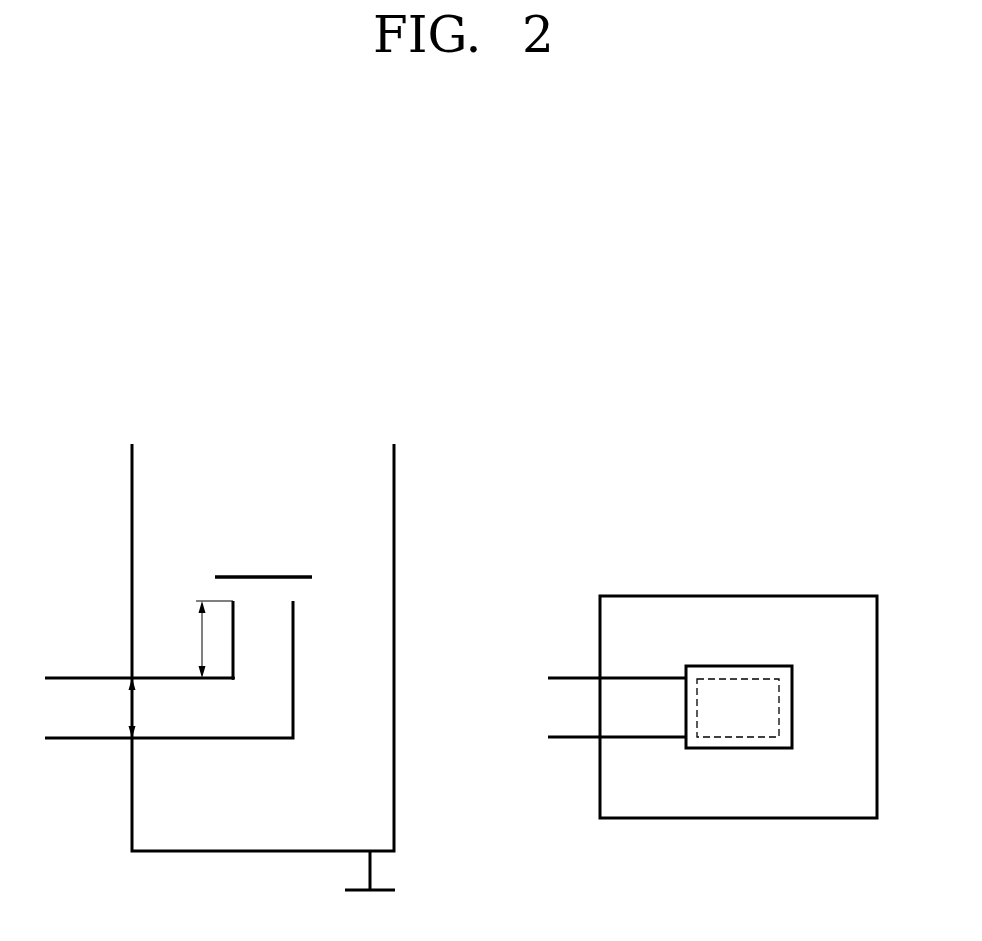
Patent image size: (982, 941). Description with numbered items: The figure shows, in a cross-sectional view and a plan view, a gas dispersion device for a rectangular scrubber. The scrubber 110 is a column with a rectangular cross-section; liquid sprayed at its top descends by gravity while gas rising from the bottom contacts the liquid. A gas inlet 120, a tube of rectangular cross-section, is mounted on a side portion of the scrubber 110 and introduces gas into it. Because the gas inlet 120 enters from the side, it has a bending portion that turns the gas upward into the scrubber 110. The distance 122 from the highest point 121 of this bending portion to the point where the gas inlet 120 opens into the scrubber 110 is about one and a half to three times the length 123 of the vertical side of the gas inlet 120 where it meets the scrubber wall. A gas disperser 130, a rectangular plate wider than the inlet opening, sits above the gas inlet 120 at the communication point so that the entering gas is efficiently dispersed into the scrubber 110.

The scrubber 110 is at (395, 472).
The gas inlet 120 is at (294, 657).
The highest point 121 is at (233, 678).
The distance 122 is at (194, 639).
The length 123 is at (111, 708).
The gas disperser 130 is at (281, 575).